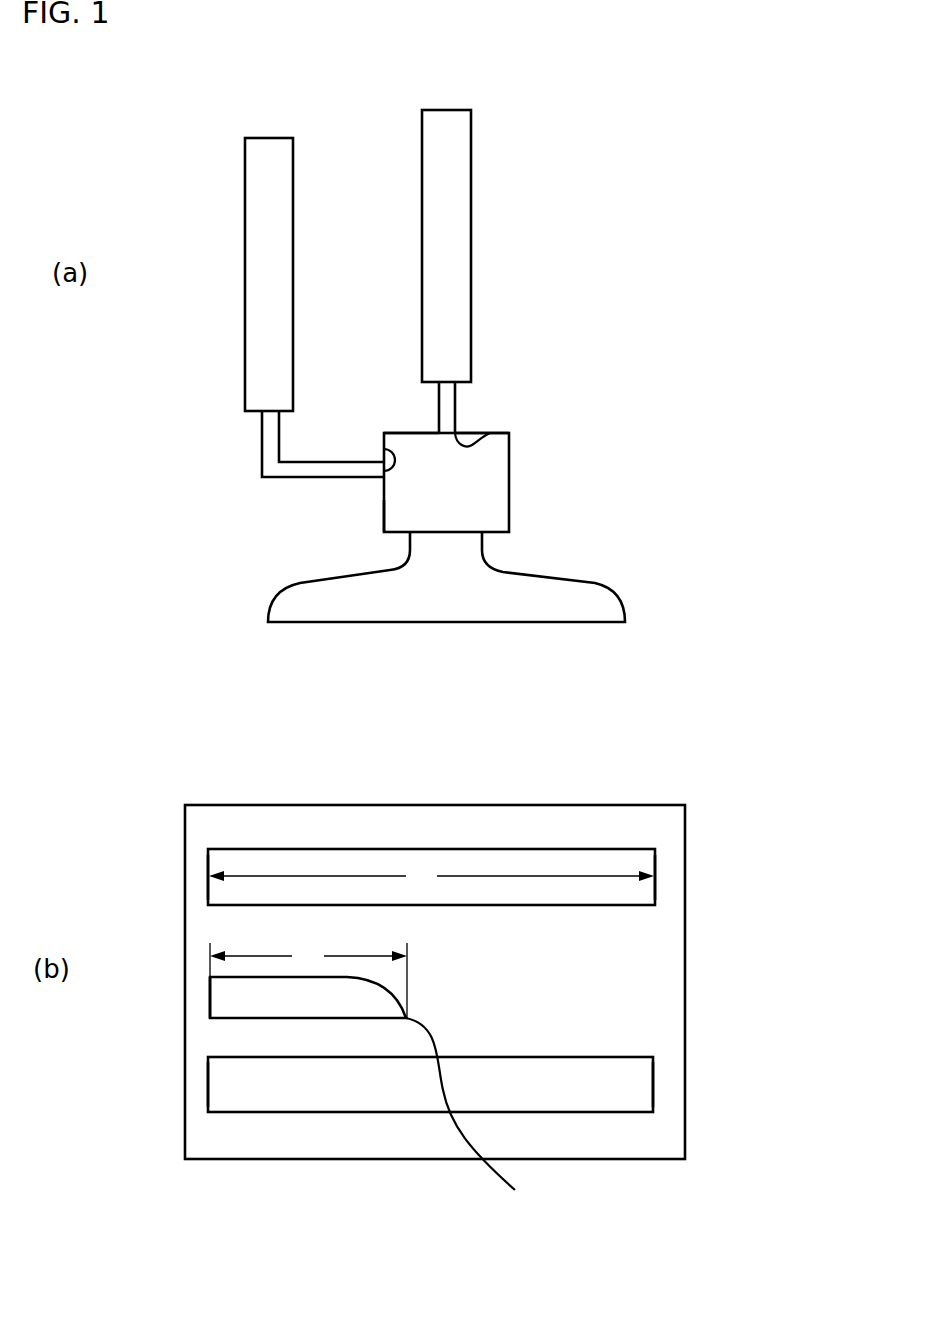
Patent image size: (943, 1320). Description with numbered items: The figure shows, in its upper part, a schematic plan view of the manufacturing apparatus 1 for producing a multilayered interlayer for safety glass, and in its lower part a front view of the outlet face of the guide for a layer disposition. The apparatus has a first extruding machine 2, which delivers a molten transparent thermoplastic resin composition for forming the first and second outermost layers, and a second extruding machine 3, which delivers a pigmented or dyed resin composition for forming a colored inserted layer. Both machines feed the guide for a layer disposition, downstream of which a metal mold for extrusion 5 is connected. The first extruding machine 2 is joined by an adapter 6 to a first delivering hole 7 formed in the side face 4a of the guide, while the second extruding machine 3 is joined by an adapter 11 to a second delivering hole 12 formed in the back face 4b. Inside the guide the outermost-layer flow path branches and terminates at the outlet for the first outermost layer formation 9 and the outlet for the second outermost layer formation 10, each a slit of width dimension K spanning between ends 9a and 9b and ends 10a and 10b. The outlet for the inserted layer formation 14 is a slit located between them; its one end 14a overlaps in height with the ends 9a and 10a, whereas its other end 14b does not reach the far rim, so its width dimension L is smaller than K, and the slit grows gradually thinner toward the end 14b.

The manufacturing apparatus 1 is at (213, 118).
The first extruding machine 2 is at (245, 206).
The second extruding machine 3 is at (471, 177).
The side face 4a is at (383, 514).
The back face 4b is at (420, 431).
The metal mold for extrusion 5 is at (545, 574).
The adapter 6 is at (262, 467).
The first delivering hole 7 is at (383, 452).
The outlet for the first outermost layer formation 9 is at (434, 843).
The end of the outlet for the first outermost layer formation 9a is at (208, 876).
The end of the outlet for the first outermost layer formation 9b is at (655, 862).
The outlet for the second outermost layer formation 10 is at (295, 1125).
The end of the outlet for the second outermost layer formation 10a is at (208, 1090).
The end of the outlet for the second outermost layer formation 10b is at (653, 1087).
The adapter 11 is at (457, 400).
The second delivering hole 12 is at (482, 432).
The outlet for the inserted layer formation 14 is at (221, 1026).
The one end of the outlet for the inserted layer formation 14a is at (210, 990).
The end on another side of the outlet for the inserted layer formation 14b is at (487, 1114).